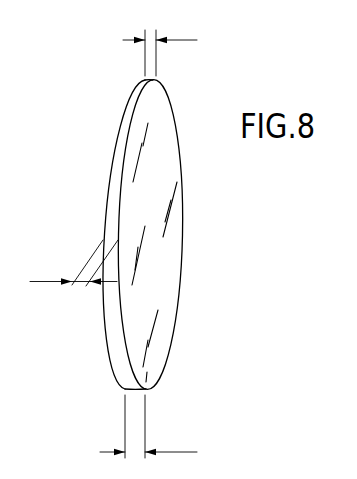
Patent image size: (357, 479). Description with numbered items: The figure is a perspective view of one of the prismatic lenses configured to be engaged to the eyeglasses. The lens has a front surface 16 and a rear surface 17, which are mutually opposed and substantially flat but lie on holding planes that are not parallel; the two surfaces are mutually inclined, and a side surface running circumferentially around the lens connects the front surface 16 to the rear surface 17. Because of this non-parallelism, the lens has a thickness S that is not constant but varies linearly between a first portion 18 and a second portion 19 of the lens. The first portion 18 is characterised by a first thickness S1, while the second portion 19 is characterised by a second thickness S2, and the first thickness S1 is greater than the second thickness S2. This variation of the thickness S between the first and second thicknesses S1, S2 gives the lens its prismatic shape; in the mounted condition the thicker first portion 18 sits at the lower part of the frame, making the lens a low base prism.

The front surface 16 is at (107, 188).
The rear surface 17 is at (157, 255).
The first portion 18 is at (99, 375).
The second portion 19 is at (112, 95).
The thickness S is at (74, 263).
The first thickness S1 is at (148, 426).
The second thickness S2 is at (161, 46).